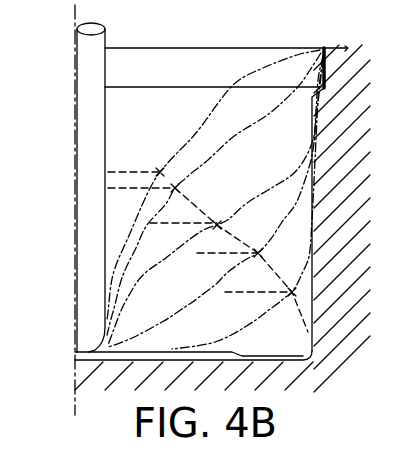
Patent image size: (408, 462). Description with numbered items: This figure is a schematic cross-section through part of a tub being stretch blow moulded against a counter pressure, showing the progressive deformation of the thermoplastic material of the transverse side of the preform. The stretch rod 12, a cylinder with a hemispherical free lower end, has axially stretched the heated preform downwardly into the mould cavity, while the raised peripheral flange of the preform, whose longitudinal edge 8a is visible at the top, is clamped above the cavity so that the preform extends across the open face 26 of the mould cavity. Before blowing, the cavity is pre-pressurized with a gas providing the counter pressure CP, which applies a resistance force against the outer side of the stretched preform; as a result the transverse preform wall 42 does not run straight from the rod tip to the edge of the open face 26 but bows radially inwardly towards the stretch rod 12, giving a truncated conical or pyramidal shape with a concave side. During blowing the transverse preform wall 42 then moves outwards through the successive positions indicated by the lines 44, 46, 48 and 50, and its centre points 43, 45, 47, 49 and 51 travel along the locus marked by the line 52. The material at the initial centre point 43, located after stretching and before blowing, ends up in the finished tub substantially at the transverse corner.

The stretch rod 12 is at (88, 152).
The open face of the mould cavity 26 is at (160, 48).
The longitudinal edge of the raised peripheral flange 8a is at (339, 47).
The transverse preform wall 42 is at (194, 128).
The centre point of the transverse preform wall 43 is at (163, 171).
The line indicating a position of the transverse preform wall 44 is at (272, 116).
The centre point of the transverse preform wall 45 is at (177, 189).
The line indicating a position of the transverse preform wall 46 is at (297, 171).
The centre point of the transverse preform wall 47 is at (216, 227).
The line indicating a position of the transverse preform wall 48 is at (284, 224).
The centre point of the transverse preform wall 49 is at (257, 256).
The line indicating a position of the transverse preform wall 50 is at (306, 255).
The centre point of the transverse preform wall 51 is at (291, 293).
The line indicating the locus of movement of the centre points 52 is at (214, 226).
The counter pressure CP is at (213, 204).